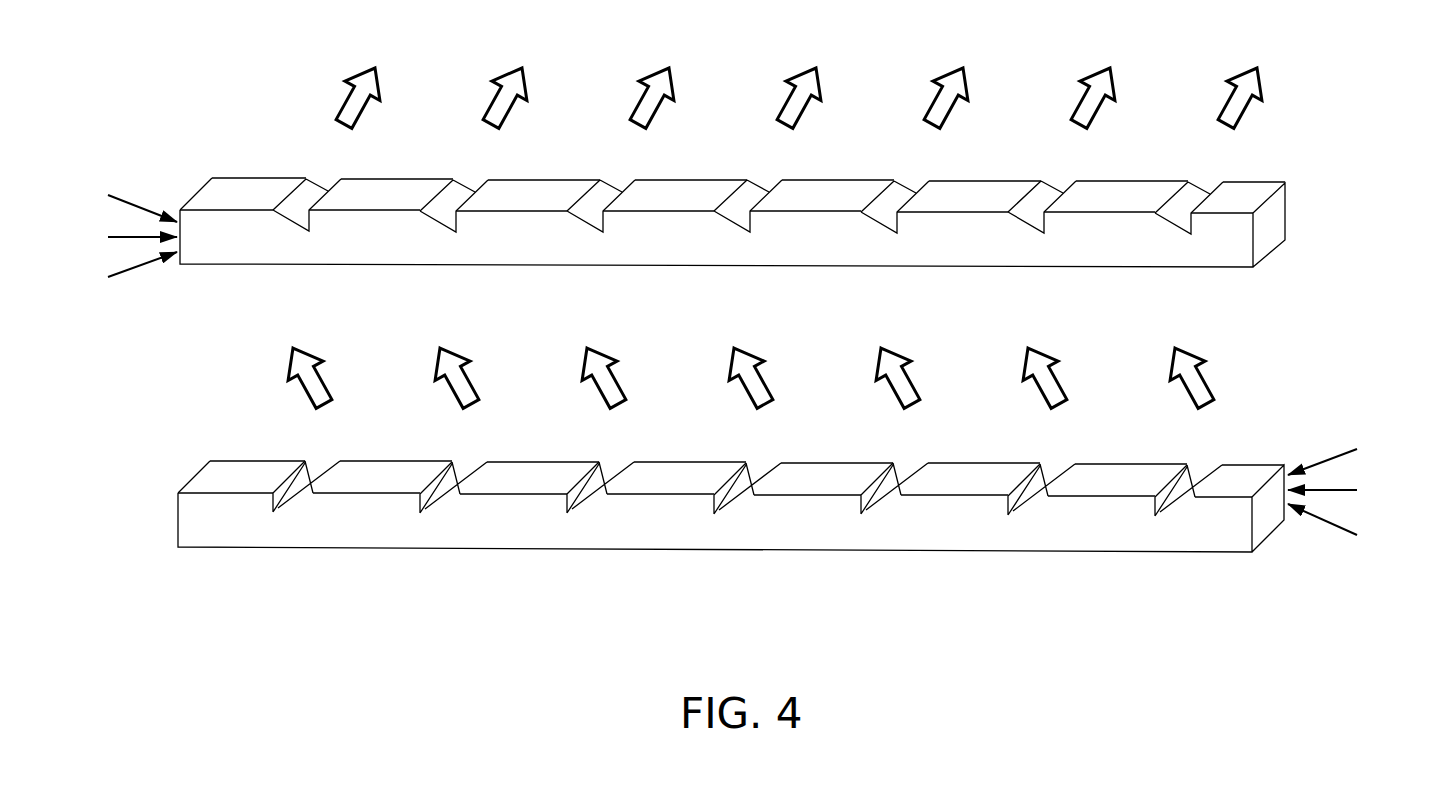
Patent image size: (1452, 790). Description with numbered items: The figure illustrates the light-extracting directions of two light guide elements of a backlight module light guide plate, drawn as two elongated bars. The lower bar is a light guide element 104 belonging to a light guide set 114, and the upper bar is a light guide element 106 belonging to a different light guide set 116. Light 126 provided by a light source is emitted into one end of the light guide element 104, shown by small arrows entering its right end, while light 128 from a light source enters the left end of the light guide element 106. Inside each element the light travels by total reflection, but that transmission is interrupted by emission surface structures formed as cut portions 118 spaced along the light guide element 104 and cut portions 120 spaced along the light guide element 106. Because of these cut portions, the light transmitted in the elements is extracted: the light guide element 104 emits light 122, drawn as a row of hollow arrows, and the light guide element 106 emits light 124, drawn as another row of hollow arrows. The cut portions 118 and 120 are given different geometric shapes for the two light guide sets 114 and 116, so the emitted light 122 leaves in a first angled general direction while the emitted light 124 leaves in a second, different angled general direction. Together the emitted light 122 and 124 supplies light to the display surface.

The light guide element 104 is at (1236, 522).
The light guide element 106 is at (1272, 222).
The light guide set 114 is at (167, 518).
The light guide set 116 is at (1332, 158).
The cut portion 118 is at (1028, 497).
The cut portion 120 is at (1192, 222).
The emitted light 122 is at (1213, 389).
The emitted light 124 is at (1250, 117).
The light emitted into light guide element 126 is at (1340, 453).
The light emitted into light guide element 128 is at (118, 200).